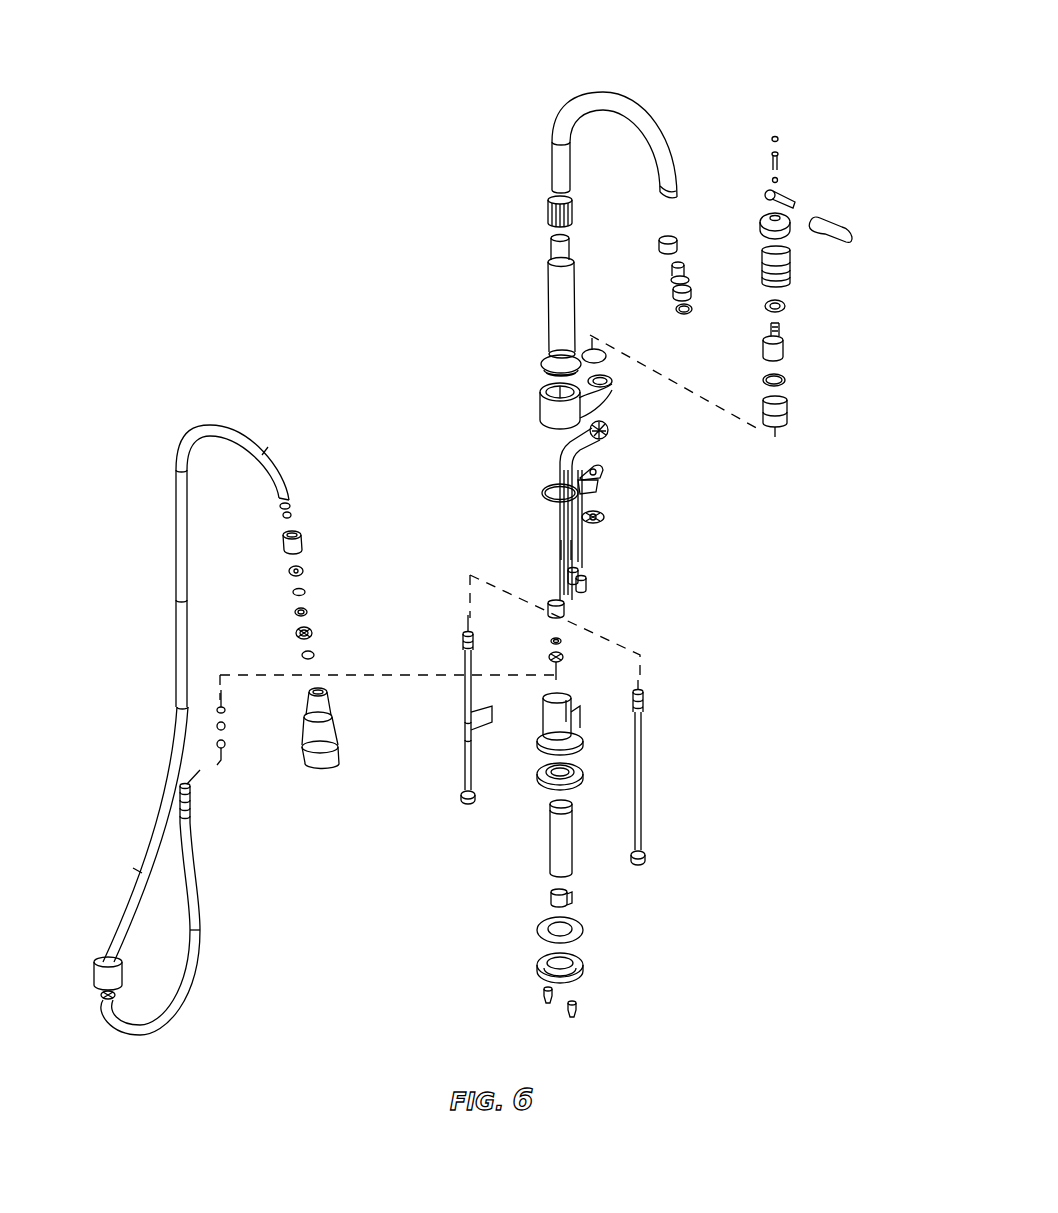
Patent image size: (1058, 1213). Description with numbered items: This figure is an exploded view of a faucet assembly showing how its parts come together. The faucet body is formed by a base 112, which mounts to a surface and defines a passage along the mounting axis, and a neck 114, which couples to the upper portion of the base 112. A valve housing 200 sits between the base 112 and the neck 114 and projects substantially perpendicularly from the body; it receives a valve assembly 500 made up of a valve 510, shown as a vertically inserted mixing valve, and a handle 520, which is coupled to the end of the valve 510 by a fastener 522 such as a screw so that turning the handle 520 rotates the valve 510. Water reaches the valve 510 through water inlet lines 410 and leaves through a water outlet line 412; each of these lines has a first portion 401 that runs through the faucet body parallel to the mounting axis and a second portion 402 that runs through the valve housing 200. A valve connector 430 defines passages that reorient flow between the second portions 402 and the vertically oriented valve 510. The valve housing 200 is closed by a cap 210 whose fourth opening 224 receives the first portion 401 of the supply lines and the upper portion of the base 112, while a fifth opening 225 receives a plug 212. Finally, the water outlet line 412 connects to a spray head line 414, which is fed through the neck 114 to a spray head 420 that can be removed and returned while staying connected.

The neck 114 is at (558, 301).
The valve housing 200 is at (565, 428).
The valve connector 430 is at (605, 428).
The second portion 402 is at (566, 440).
The water outlet line 412 is at (560, 465).
The water inlet line 410 is at (578, 560).
The first portion 401 is at (552, 543).
The fourth opening 224 is at (543, 492).
The fifth opening 225 is at (600, 473).
The cap 210 is at (588, 482).
The plug 212 is at (600, 518).
The base 112 is at (564, 717).
The valve assembly 500 is at (733, 127).
The fastener 522 is at (773, 167).
The valve 510 is at (786, 349).
The handle 520 is at (808, 198).
The spray head line 414 is at (196, 957).
The spray head 420 is at (325, 745).